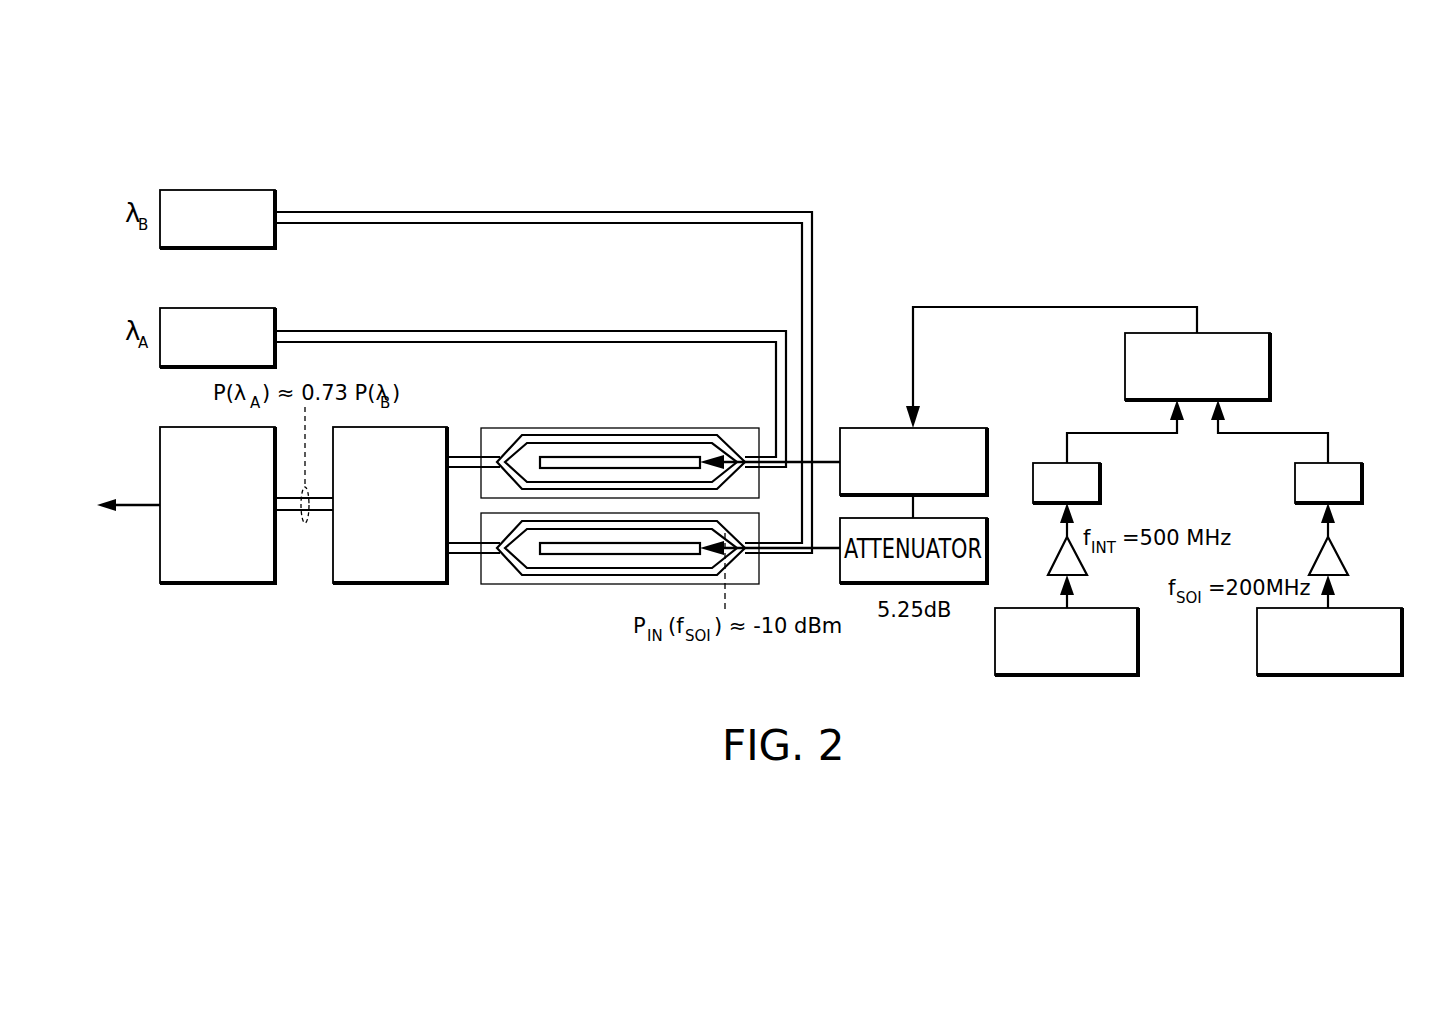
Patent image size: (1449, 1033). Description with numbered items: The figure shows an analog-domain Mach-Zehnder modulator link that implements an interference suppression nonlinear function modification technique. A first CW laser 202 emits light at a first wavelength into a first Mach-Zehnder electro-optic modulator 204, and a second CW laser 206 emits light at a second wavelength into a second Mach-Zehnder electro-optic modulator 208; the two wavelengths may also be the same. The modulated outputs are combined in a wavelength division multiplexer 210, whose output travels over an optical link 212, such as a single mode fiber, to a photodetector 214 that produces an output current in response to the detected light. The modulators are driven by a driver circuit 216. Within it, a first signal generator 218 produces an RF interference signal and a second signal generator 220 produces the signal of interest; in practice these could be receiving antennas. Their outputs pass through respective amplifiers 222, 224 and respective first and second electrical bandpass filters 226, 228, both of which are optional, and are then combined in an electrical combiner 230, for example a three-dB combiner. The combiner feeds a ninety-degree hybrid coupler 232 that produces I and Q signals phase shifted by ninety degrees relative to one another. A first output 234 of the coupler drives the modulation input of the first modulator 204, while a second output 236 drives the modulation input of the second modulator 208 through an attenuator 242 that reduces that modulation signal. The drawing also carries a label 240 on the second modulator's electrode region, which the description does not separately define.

The first CW laser 202 is at (215, 308).
The first Mach-Zehnder electro-optic modulator 204 is at (735, 513).
The second CW laser 206 is at (215, 190).
The second Mach-Zehnder electro-optic modulator 208 is at (660, 578).
The wavelength division multiplexer 210 is at (390, 584).
The optical link 212 is at (295, 513).
The photodetector 214 is at (218, 584).
The driver circuit 216 is at (1280, 272).
The first signal generator 218 is at (1068, 676).
The second signal generator 220 is at (1333, 676).
The amplifier 222 is at (1058, 556).
The amplifier 224 is at (1342, 553).
The first electrical bandpass filter 226 is at (1100, 485).
The second electrical bandpass filter 228 is at (1362, 485).
The electrical combiner 230 is at (1270, 368).
The 90° hybrid coupler 232 is at (957, 428).
The first output 234 is at (820, 460).
The second output 236 is at (913, 507).
The modulator electrode 240 is at (570, 556).
The attenuator 242 is at (683, 456).